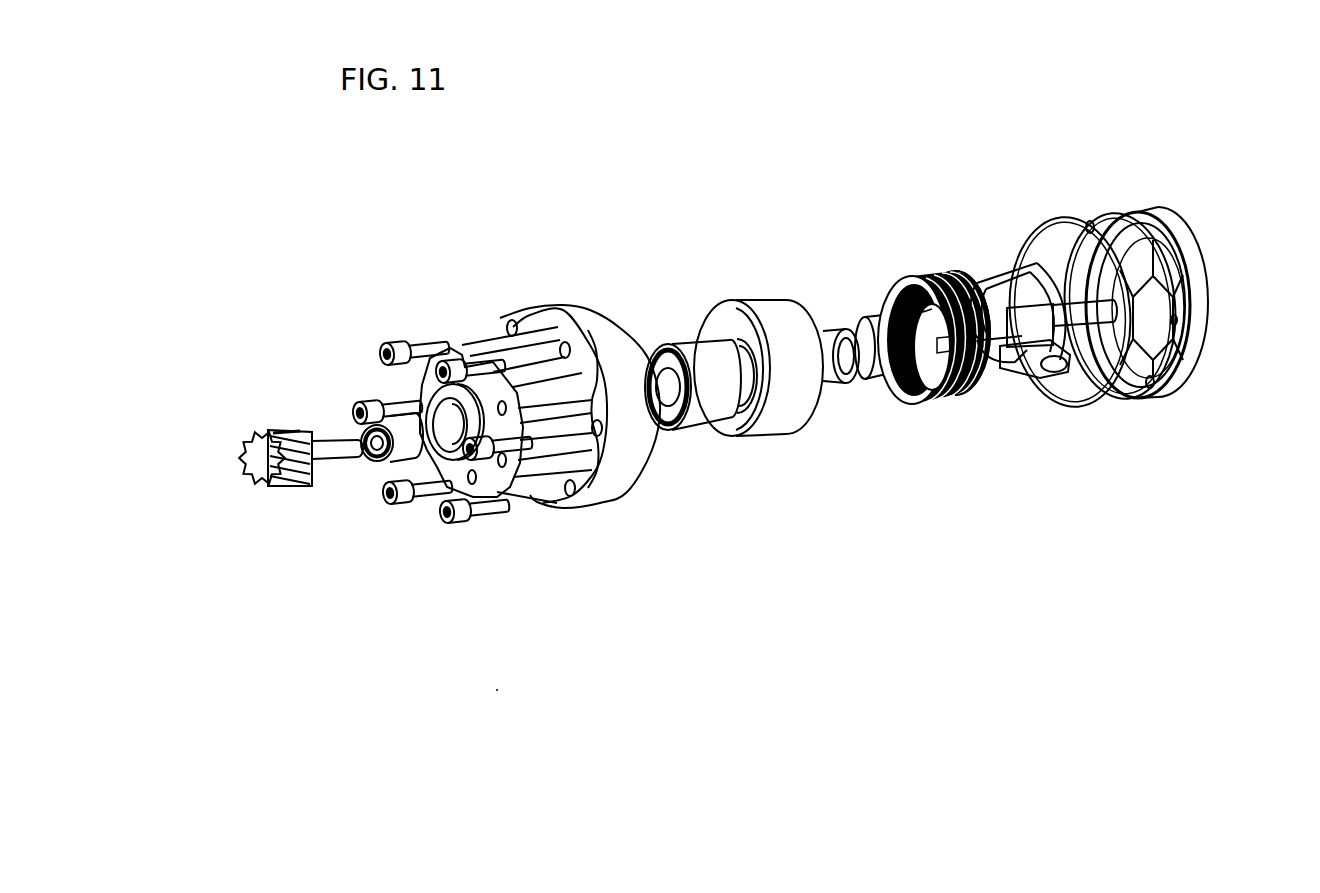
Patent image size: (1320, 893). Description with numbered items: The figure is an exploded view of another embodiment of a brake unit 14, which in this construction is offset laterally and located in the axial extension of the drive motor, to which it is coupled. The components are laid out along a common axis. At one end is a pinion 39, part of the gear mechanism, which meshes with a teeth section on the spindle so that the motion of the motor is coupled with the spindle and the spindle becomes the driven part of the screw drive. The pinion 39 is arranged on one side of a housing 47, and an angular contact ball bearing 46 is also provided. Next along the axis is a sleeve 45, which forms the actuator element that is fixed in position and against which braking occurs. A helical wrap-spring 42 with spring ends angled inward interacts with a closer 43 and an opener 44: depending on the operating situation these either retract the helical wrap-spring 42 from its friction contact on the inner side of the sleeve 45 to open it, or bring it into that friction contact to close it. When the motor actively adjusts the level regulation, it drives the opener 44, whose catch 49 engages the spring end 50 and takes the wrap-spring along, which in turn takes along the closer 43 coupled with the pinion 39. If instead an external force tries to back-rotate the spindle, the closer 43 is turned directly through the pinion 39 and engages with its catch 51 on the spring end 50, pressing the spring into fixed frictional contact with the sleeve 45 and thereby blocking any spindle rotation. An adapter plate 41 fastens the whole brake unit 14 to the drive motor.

The brake unit 14 is at (876, 559).
The pinion 39 is at (273, 430).
The adapter plate 41 is at (1198, 332).
The helical wrap-spring 42 is at (975, 397).
The closer 43 is at (876, 385).
The opener 44 is at (1040, 382).
The sleeve 45 is at (797, 422).
The angular contact ball bearing 46 is at (710, 405).
The housing 47 is at (625, 480).
The catch 49 is at (1000, 276).
The spring end 50 is at (927, 272).
The catch 51 is at (903, 395).